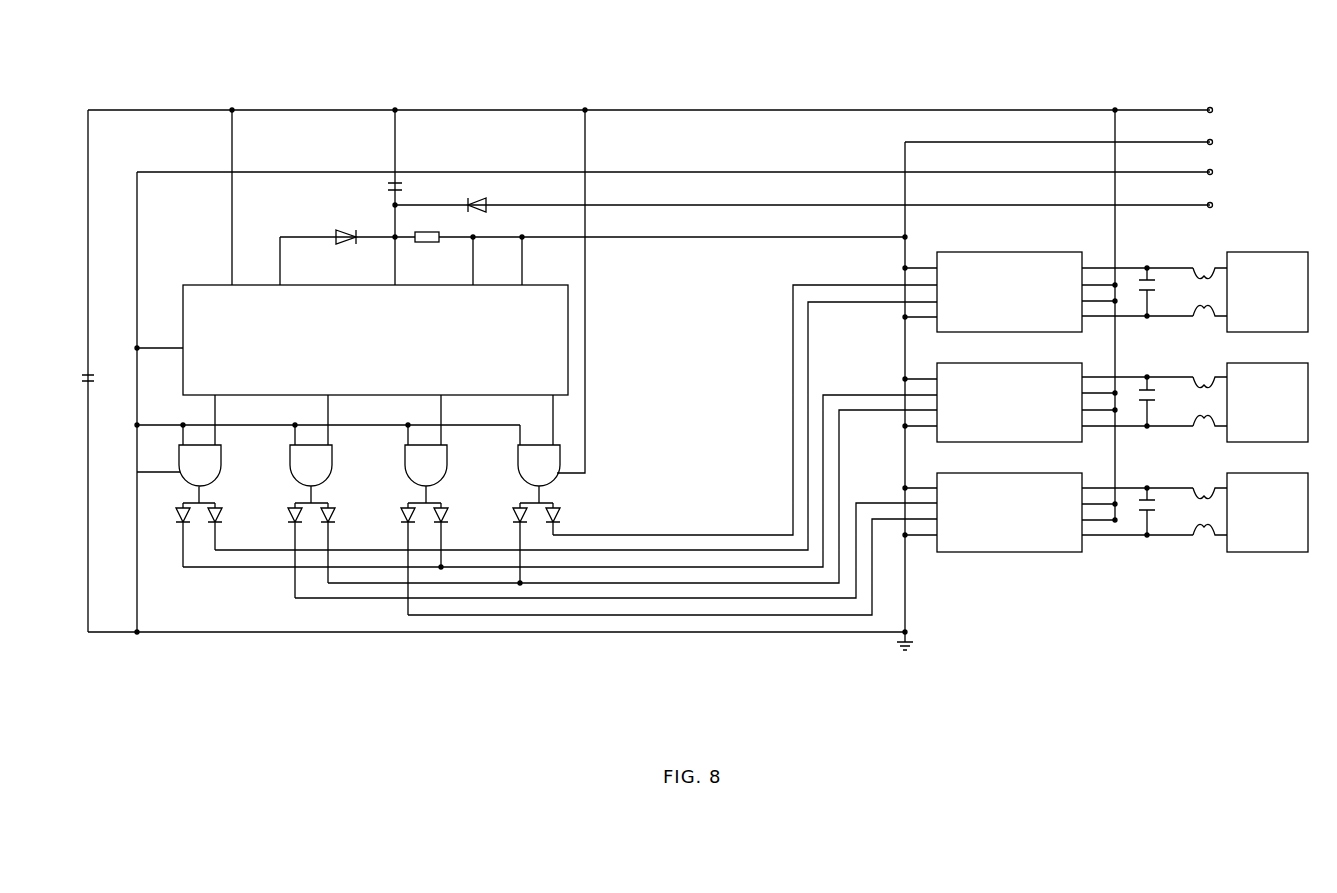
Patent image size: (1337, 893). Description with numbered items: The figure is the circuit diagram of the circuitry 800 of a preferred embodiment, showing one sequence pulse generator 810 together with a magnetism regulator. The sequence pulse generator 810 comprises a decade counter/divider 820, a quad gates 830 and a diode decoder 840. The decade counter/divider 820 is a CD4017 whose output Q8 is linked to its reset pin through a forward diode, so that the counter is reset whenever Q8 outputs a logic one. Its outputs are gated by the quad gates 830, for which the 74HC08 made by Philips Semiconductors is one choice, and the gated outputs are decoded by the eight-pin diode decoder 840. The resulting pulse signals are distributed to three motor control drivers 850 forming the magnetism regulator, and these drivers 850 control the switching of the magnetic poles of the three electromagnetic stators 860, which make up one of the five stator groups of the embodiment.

The magnetic field generating circuit 800 is at (695, 367).
The sequence pulse generator 810 is at (509, 391).
The decade counter/divider 820 is at (368, 341).
The quad gates 830 is at (454, 452).
The diode decoder 840 is at (544, 453).
The motor drivers 850 is at (1066, 365).
The stators 860 is at (1195, 414).